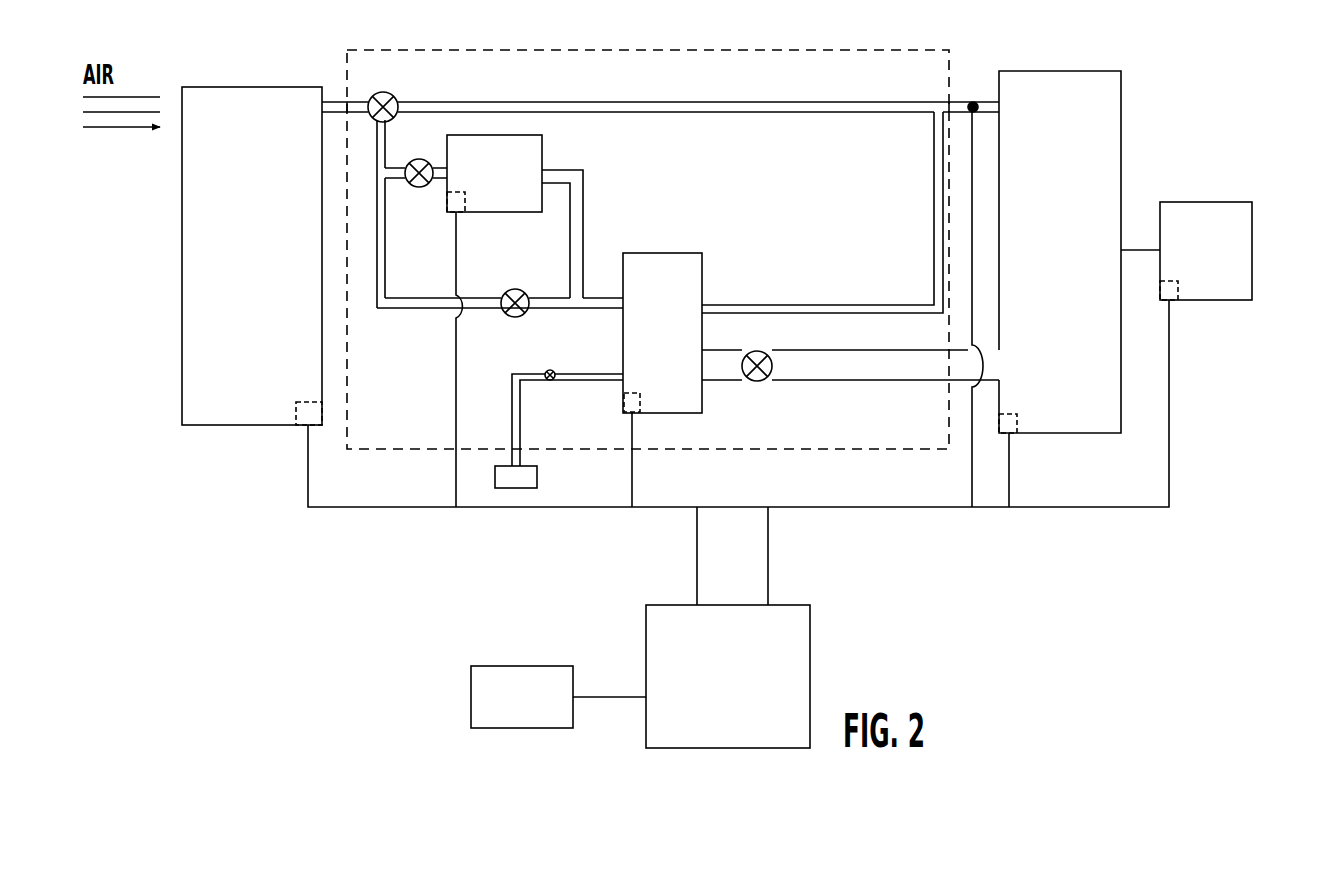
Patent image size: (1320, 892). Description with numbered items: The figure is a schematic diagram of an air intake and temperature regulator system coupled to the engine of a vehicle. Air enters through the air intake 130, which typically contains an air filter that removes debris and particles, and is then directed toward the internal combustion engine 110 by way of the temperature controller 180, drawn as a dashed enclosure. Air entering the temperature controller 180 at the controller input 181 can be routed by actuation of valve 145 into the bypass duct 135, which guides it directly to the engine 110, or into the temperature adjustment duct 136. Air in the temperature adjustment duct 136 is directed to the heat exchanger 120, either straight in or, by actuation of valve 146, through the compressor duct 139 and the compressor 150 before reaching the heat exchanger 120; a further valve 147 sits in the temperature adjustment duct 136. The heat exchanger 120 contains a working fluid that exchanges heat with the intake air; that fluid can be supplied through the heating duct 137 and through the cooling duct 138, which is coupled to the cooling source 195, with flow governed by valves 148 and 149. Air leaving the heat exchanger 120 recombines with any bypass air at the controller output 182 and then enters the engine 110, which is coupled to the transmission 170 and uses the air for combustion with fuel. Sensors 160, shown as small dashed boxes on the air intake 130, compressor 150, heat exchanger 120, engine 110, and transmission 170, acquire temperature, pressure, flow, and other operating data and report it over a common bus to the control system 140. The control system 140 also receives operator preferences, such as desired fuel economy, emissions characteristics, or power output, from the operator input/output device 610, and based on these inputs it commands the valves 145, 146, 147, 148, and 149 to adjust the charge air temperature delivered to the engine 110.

The internal combustion engine 110 is at (1083, 122).
The heat exchanger 120 is at (683, 281).
The air intake 130 is at (202, 197).
The bypass duct 135 is at (710, 100).
The temperature adjustment duct 136 is at (401, 312).
The heating duct 137 is at (903, 384).
The cooling duct 138 is at (583, 372).
The compressor duct 139 is at (442, 180).
The control system 140 is at (787, 655).
The valve 145 is at (388, 92).
The valve 146 is at (414, 158).
The valve 147 is at (515, 289).
The valve 148 is at (757, 351).
The valve 149 is at (553, 381).
The compressor 150 is at (527, 157).
The sensors 160 is at (462, 200).
The transmission 170 is at (1233, 227).
The temperature controller 180 is at (819, 46).
The controller input 181 is at (345, 99).
The controller output 182 is at (952, 99).
The cooling source 195 is at (537, 472).
The operator input/output device 610 is at (488, 677).